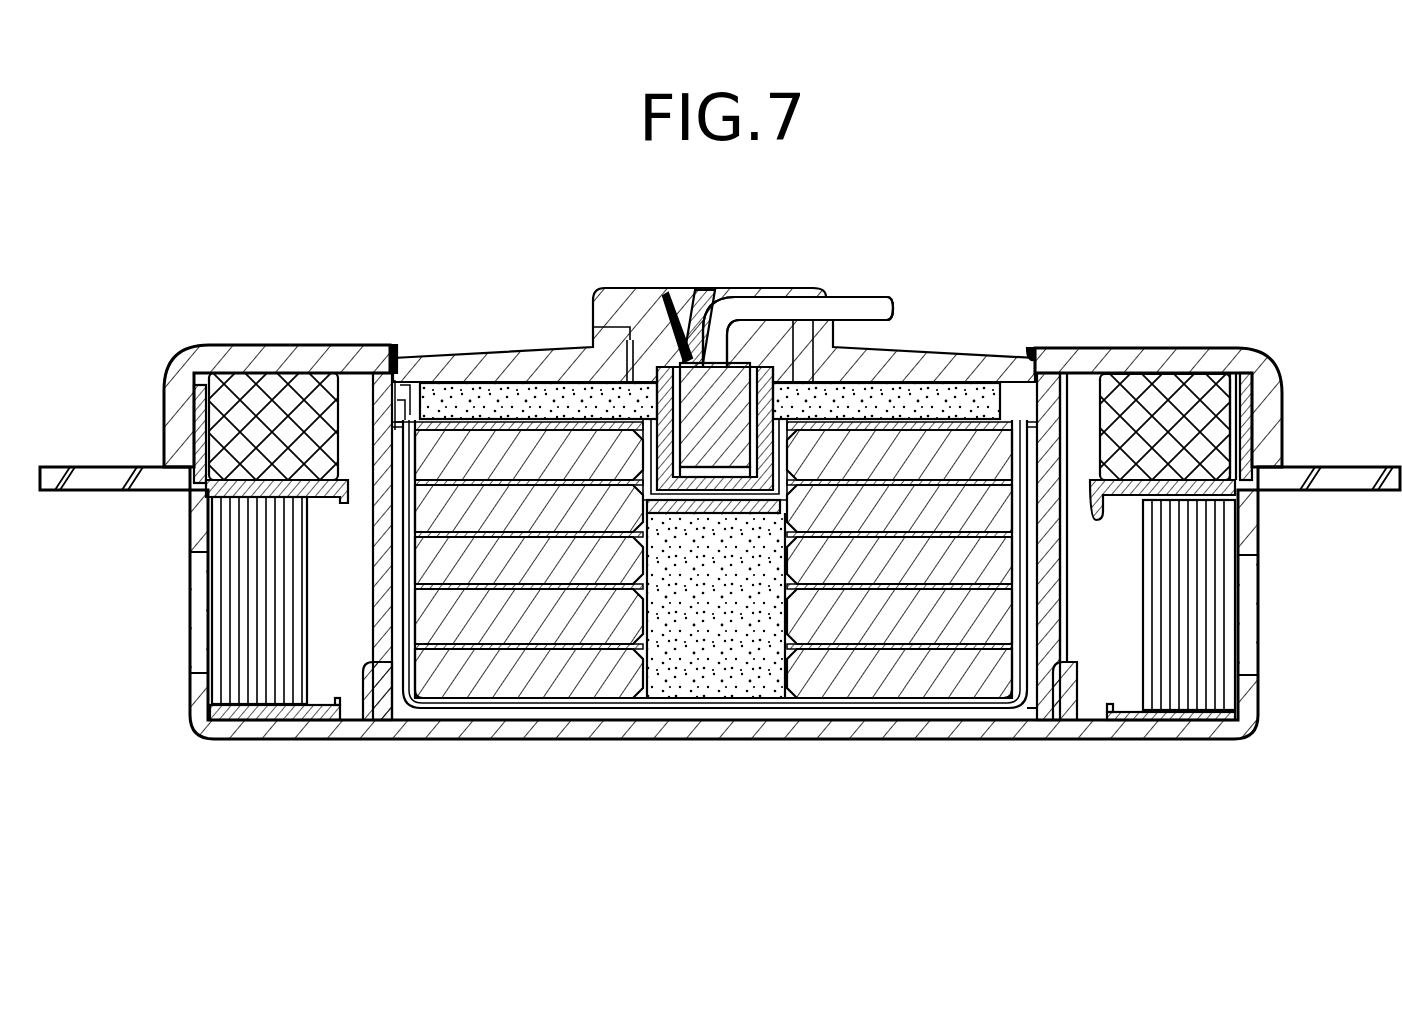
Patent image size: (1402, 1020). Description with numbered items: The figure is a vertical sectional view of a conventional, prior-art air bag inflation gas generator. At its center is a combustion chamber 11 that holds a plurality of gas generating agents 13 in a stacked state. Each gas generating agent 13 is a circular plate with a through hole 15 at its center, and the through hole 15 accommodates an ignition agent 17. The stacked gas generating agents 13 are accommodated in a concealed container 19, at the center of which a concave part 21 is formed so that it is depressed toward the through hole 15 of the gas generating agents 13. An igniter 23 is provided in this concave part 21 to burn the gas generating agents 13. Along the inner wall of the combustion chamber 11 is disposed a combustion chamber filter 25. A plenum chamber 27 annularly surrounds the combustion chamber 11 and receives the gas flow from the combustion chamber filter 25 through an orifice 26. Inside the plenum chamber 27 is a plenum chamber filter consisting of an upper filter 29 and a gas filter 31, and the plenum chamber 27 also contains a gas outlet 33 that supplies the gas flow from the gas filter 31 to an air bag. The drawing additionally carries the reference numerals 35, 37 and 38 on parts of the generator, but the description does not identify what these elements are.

The combustion chamber 11 is at (457, 657).
The gas generating agents 13 is at (470, 450).
The through hole 15 is at (649, 677).
The ignition agent 17 is at (757, 672).
The concealed container 19 is at (742, 713).
The concave part 21 is at (670, 450).
The igniter 23 is at (760, 367).
The combustion chamber filter 25 is at (1023, 737).
The orifice 26 is at (383, 430).
The plenum chamber 27 is at (1117, 680).
The upper filter 29 is at (1165, 403).
The gas filter 31 is at (1200, 630).
The gas outlet 33 is at (1253, 603).
The bottom plate 35 is at (805, 710).
The sealing filler 37 is at (940, 417).
The seal 38 is at (388, 345).